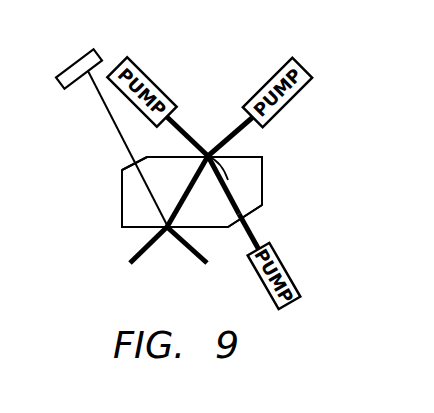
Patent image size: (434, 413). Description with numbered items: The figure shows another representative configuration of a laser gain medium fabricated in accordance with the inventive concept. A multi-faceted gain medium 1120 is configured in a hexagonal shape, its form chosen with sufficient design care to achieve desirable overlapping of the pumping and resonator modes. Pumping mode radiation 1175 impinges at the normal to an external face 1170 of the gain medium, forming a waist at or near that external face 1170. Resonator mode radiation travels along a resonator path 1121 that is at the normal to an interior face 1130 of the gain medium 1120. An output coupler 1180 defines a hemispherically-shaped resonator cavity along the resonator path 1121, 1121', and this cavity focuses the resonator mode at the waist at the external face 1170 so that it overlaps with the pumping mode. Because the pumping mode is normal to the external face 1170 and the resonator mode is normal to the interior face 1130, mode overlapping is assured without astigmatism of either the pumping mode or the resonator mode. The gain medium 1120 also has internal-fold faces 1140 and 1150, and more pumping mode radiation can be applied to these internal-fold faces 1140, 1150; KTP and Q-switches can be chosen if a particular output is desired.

The multi-faceted gain medium 1120 is at (263, 180).
The resonator path 1121 is at (100, 149).
The resonator path 1121' is at (145, 184).
The interior face 1130 is at (115, 158).
The internal-fold face 1140 is at (262, 157).
The internal-fold face 1150 is at (173, 263).
The external face 1170 is at (262, 205).
The pumping mode radiation 1175 is at (250, 231).
The output coupler 1180 is at (104, 60).